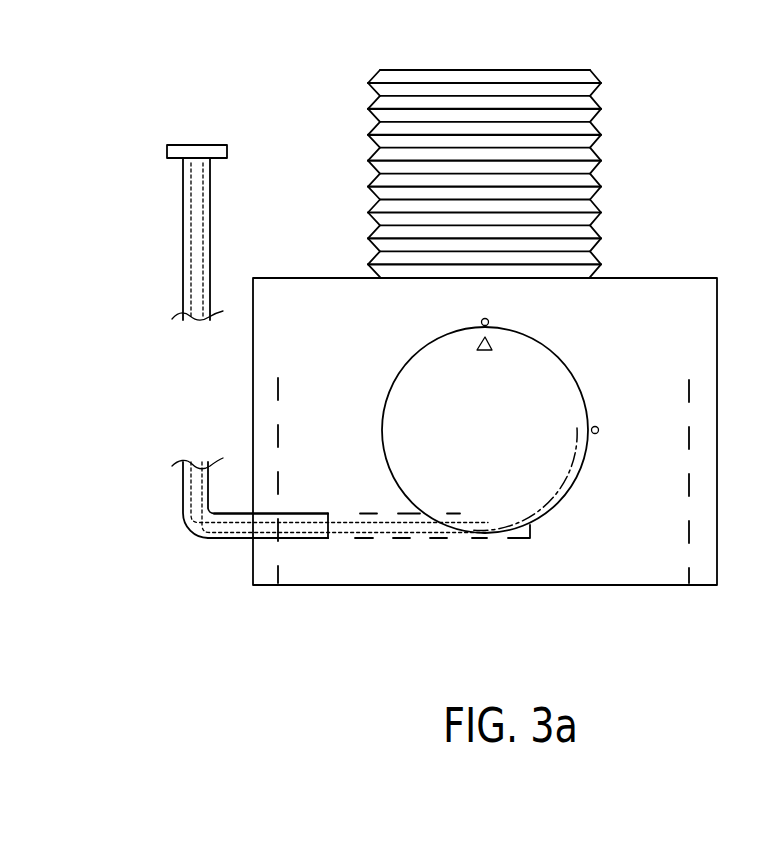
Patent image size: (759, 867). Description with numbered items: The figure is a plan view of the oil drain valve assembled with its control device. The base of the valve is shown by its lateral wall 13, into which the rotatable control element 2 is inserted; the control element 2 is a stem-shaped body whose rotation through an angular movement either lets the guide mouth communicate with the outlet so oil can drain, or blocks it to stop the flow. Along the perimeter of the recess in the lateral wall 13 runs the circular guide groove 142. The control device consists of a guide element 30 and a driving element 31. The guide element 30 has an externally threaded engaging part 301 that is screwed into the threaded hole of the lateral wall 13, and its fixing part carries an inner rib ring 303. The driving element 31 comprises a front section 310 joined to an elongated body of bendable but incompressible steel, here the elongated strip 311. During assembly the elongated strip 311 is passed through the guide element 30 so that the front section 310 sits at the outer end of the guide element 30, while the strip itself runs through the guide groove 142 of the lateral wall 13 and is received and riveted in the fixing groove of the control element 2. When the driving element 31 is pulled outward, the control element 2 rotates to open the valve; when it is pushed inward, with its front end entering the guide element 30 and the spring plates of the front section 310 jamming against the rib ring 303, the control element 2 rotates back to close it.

The control element 2 is at (543, 367).
The lateral wall 13 is at (382, 557).
The guide element 30 is at (187, 302).
The inner rib ring 303 is at (185, 203).
The front section 310 is at (173, 150).
The driving element 31 is at (198, 490).
The engaging part 301 is at (293, 540).
The elongated strip 311 is at (573, 487).
The guide groove 142 is at (443, 540).